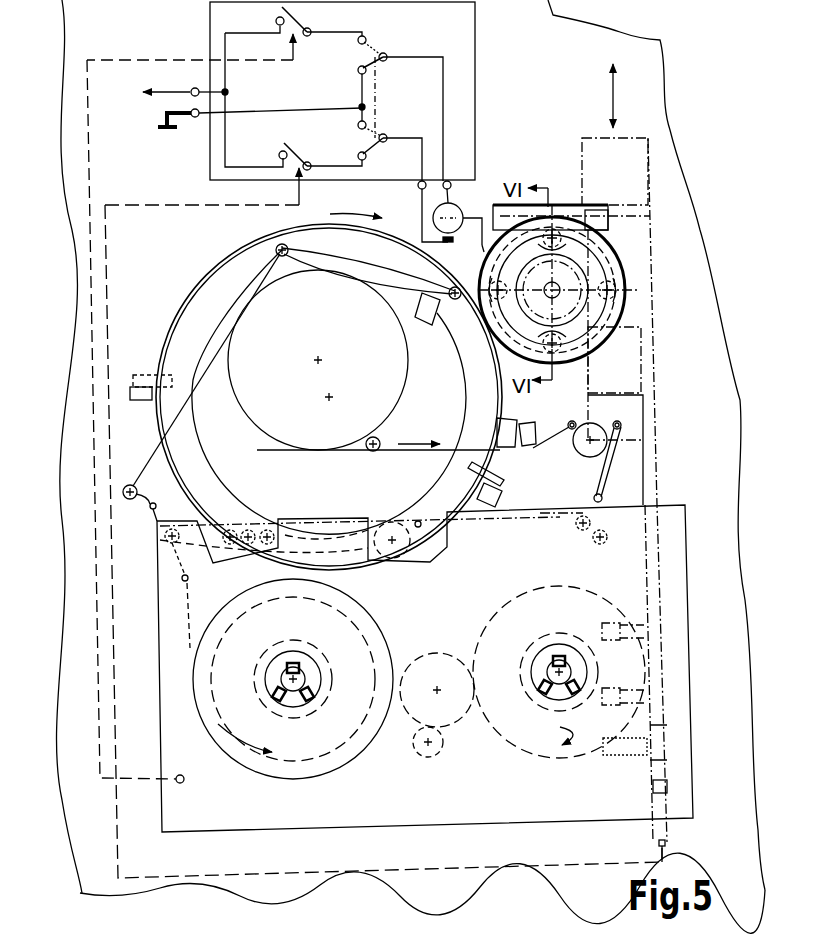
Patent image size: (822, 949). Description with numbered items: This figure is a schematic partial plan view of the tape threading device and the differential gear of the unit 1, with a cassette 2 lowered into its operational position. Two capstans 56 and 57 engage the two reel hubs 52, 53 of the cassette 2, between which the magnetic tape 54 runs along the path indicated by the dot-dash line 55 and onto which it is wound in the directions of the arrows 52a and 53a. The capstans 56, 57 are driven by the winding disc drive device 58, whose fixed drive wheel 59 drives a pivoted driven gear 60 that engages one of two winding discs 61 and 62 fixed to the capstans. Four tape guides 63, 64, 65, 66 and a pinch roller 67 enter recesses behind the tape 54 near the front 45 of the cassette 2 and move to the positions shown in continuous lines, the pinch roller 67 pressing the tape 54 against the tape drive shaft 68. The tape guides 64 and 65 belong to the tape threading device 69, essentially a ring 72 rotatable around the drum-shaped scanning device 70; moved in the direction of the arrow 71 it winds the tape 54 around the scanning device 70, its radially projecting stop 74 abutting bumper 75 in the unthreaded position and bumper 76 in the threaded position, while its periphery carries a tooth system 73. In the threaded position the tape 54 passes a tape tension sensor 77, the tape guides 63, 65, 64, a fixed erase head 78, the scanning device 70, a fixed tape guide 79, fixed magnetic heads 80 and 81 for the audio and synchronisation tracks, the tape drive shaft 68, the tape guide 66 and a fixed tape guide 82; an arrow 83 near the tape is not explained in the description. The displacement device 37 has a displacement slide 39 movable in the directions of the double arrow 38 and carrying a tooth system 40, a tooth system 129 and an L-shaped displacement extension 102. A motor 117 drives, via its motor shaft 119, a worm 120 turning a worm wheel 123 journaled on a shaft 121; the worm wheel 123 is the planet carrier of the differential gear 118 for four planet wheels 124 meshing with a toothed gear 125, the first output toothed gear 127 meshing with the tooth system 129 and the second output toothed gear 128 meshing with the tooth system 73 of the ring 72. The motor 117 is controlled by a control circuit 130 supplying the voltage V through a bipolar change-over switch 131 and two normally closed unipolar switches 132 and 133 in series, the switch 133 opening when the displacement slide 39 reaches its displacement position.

The unit 1 is at (156, 900).
The cassette 2 is at (306, 832).
The displacement device 37 is at (660, 432).
The double arrow 38 is at (614, 99).
The displacement slide 39 is at (653, 492).
The tooth system 40 is at (655, 705).
The front 45 is at (340, 517).
The reel hub 52 is at (293, 679).
The arrow 52a is at (238, 727).
The reel hub 53 is at (559, 672).
The arrow 53a is at (550, 731).
The magnetic tape 54 is at (188, 608).
The dot-dash line 55 is at (303, 522).
The capstan 56 is at (288, 672).
The capstan 57 is at (553, 666).
The winding disc drive device 58 is at (450, 753).
The fixed drive wheel 59 is at (432, 756).
The driven gear 60 is at (438, 652).
The winding disc 61 is at (358, 725).
The winding disc 62 is at (490, 720).
The tape guide 63 is at (137, 490).
The tape guide 64 is at (443, 273).
The tape guide 65 is at (280, 245).
The tape guide 66 is at (626, 418).
The pinch roller 67 is at (575, 453).
The tape drive shaft 68 is at (567, 424).
The tape threading device 69 is at (325, 393).
The drum-shaped scanning device 70 is at (404, 372).
The arrow 71 is at (346, 210).
The ring 72 is at (240, 268).
The tooth system 73 is at (175, 312).
The stop 74 is at (140, 377).
The bumper 75 is at (132, 399).
The bumper 76 is at (503, 496).
The tape tension sensor 77 is at (150, 508).
The fixed magnetic head 78 is at (422, 325).
The fixed tape guide 79 is at (380, 442).
The fixed magnetic head 80 is at (505, 428).
The fixed magnetic head 81 is at (527, 423).
The fixed tape guide 82 is at (603, 495).
The direction arrow 83 is at (420, 442).
The displacement extension 102 is at (613, 692).
The motor 117 is at (482, 200).
The differential gear 118 is at (581, 312).
The motor shaft 119 is at (482, 245).
The worm 120 is at (572, 214).
The shaft 121 is at (560, 291).
The worm wheel 123 is at (603, 253).
The planet wheels 124 is at (574, 213).
The toothed gear 125 is at (623, 302).
The first output toothed gear 127 is at (613, 313).
The second output toothed gear 128 is at (570, 347).
The tooth system 129 is at (589, 380).
The control circuit 130 is at (477, 64).
The change-over switch 131 is at (385, 62).
The switch 132 is at (298, 18).
The switch 133 is at (297, 152).